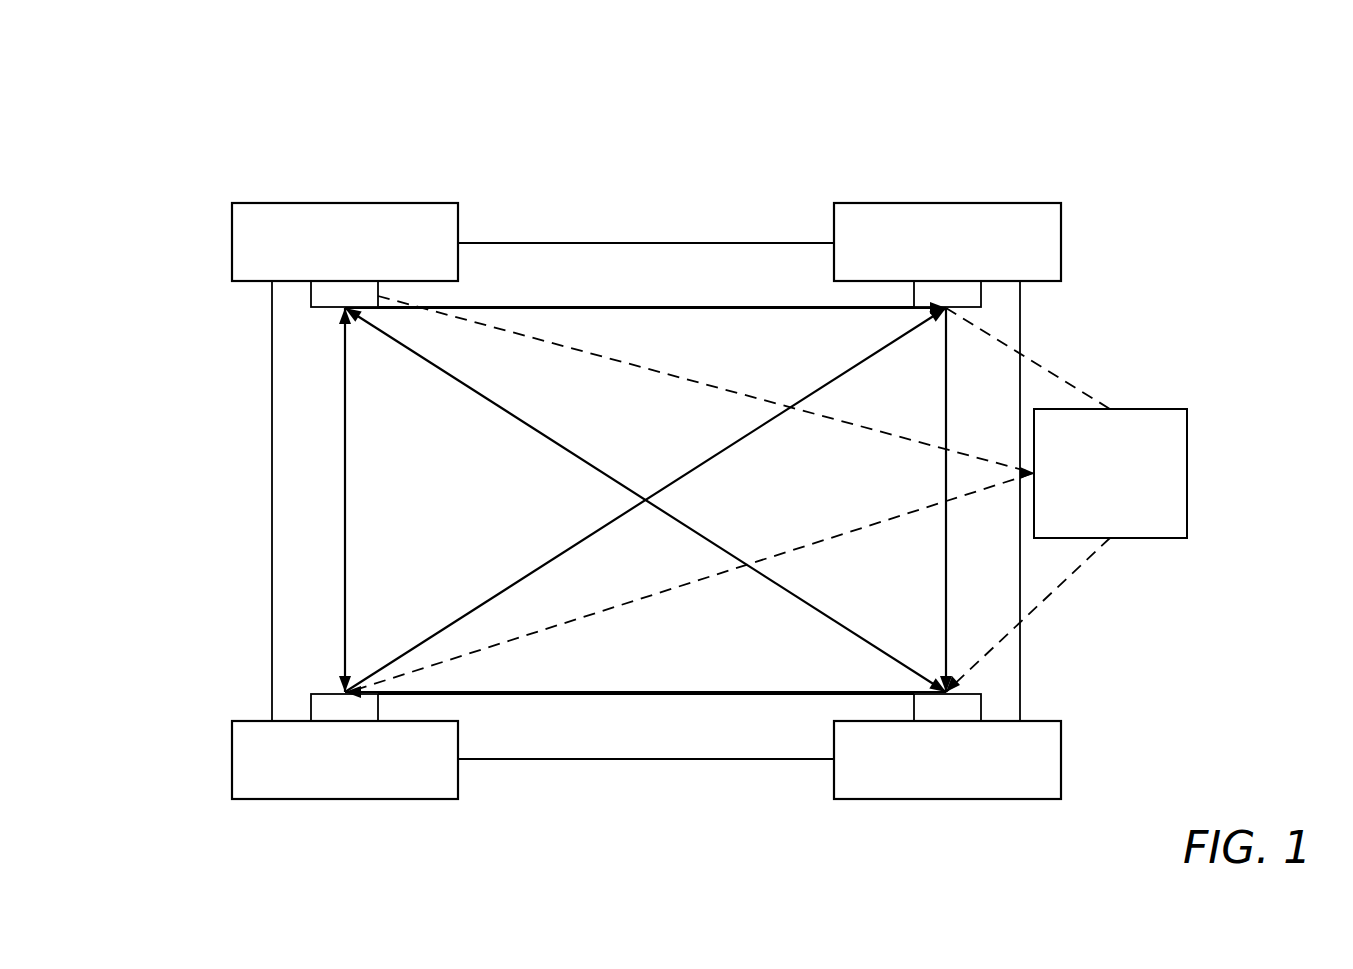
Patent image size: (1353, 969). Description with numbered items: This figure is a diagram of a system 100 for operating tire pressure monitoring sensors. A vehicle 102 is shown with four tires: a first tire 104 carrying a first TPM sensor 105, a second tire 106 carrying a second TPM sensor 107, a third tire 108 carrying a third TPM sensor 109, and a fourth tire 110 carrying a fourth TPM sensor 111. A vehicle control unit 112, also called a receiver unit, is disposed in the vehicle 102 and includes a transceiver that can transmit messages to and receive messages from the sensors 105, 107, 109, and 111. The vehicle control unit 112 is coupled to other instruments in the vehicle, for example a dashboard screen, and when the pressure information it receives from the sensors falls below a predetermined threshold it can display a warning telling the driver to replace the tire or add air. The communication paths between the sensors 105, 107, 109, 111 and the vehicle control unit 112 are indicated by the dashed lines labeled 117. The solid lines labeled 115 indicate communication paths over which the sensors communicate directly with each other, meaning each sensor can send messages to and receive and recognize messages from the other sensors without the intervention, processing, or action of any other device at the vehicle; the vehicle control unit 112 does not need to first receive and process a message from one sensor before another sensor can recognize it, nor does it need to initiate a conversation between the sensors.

The system 100 is at (1110, 120).
The vehicle 102 is at (608, 243).
The first tire 104 is at (348, 203).
The first TPM sensor 105 is at (311, 296).
The second tire 106 is at (948, 203).
The second TPM sensor 107 is at (981, 297).
The third tire 108 is at (946, 799).
The third TPM sensor 109 is at (981, 707).
The fourth tire 110 is at (340, 799).
The fourth TPM sensor 111 is at (311, 707).
The vehicle control unit 112 is at (1187, 473).
The communication paths between sensors 115 is at (707, 308).
The communication paths to vehicle control unit 117 is at (1008, 345).